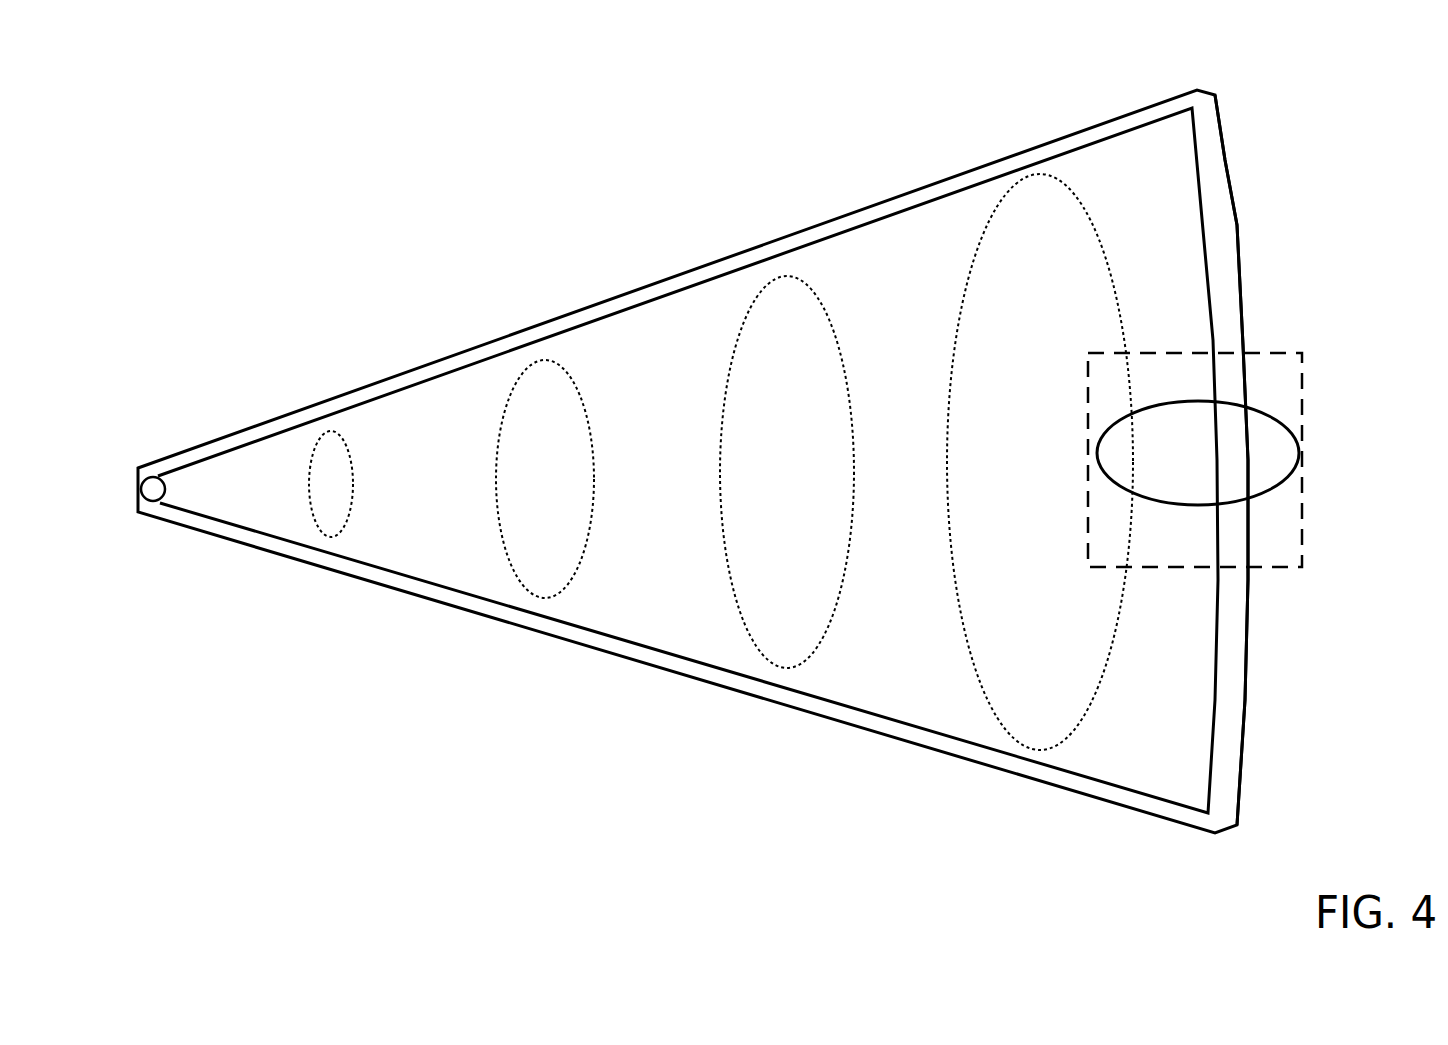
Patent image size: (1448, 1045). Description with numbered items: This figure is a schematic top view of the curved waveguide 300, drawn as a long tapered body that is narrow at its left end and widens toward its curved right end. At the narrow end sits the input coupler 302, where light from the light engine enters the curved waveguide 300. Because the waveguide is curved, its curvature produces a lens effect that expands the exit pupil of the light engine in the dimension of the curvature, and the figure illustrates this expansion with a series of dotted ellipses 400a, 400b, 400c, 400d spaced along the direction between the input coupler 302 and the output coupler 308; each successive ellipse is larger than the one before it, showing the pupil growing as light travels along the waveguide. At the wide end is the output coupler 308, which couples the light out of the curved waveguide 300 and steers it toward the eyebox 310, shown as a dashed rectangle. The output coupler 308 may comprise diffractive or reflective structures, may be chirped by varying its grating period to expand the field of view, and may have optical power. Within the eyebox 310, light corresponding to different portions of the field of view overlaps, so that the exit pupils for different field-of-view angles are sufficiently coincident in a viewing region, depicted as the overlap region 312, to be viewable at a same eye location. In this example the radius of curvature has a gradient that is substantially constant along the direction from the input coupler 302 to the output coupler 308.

The curved waveguide 300 is at (330, 157).
The input coupler 302 is at (141, 491).
The output coupler 308 is at (1252, 330).
The eyebox 310 is at (1292, 391).
The overlap region 312 is at (1290, 426).
The ellipse 400a is at (349, 458).
The ellipse 400b is at (583, 400).
The ellipse 400c is at (822, 303).
The ellipse 400d is at (1083, 210).